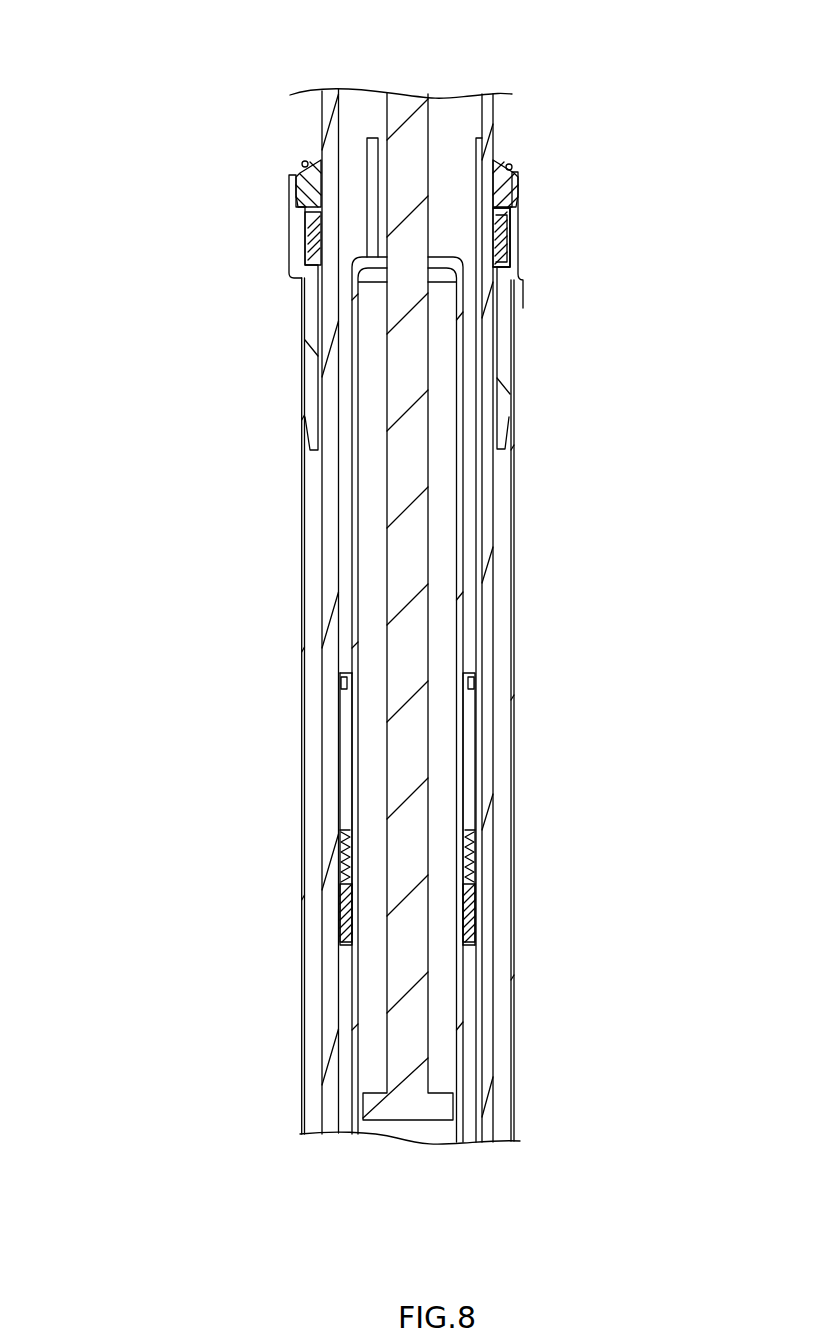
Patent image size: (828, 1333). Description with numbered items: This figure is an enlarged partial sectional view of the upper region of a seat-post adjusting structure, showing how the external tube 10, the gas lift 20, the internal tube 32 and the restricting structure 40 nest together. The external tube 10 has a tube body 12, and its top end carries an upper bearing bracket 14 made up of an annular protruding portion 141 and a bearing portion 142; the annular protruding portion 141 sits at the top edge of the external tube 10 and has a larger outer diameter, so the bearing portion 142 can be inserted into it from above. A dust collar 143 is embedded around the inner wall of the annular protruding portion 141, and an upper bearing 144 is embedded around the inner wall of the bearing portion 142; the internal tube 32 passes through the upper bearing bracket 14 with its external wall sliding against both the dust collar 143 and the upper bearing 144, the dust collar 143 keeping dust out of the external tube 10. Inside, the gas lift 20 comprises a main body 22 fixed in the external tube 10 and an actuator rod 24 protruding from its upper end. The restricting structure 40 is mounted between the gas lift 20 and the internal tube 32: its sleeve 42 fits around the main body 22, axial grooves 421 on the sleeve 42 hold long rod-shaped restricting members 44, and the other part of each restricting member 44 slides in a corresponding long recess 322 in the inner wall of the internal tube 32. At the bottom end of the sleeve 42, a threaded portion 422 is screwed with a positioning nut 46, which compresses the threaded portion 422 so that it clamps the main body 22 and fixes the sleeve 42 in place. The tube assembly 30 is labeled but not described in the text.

The external tube 10 is at (543, 1020).
The tube body 12 is at (515, 613).
The upper bearing bracket 14 is at (96, 203).
The annular protruding portion 141 is at (303, 237).
The bearing portion 142 is at (311, 310).
The dust collar 143 is at (504, 190).
The upper bearing 144 is at (506, 243).
The gas lift 20 is at (470, 333).
The main body 22 is at (352, 548).
The actuator rod 24 is at (415, 120).
The tube assembly 30 is at (507, 113).
The internal tube 32 is at (497, 495).
The recess 322 is at (373, 150).
The restricting structure 40 is at (490, 735).
The sleeve 42 is at (346, 715).
The groove 421 is at (470, 690).
The threaded portion 422 is at (470, 860).
The restricting member 44 is at (478, 765).
The positioning nut 46 is at (478, 918).